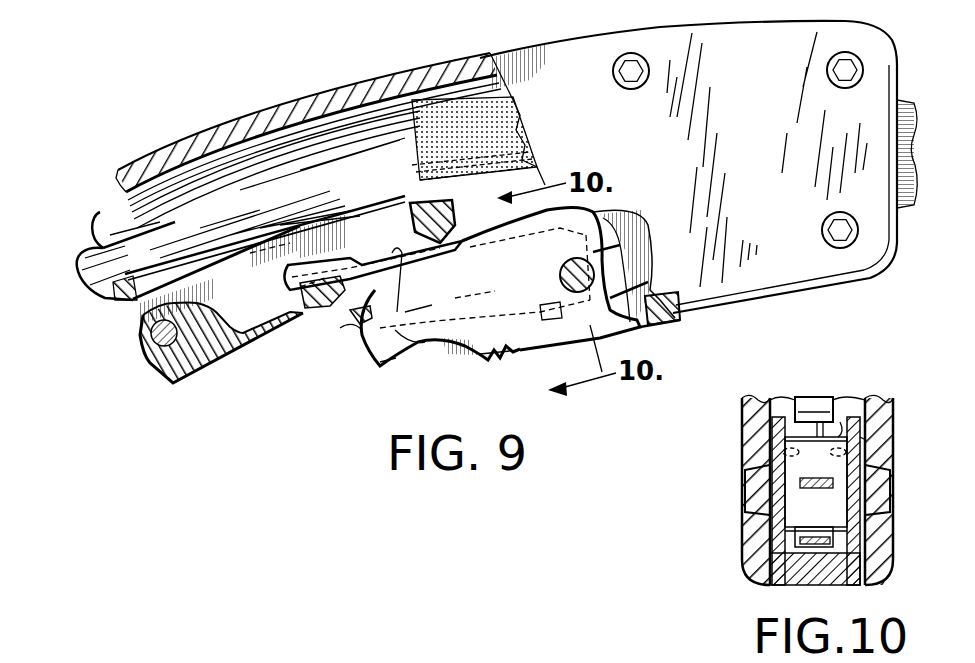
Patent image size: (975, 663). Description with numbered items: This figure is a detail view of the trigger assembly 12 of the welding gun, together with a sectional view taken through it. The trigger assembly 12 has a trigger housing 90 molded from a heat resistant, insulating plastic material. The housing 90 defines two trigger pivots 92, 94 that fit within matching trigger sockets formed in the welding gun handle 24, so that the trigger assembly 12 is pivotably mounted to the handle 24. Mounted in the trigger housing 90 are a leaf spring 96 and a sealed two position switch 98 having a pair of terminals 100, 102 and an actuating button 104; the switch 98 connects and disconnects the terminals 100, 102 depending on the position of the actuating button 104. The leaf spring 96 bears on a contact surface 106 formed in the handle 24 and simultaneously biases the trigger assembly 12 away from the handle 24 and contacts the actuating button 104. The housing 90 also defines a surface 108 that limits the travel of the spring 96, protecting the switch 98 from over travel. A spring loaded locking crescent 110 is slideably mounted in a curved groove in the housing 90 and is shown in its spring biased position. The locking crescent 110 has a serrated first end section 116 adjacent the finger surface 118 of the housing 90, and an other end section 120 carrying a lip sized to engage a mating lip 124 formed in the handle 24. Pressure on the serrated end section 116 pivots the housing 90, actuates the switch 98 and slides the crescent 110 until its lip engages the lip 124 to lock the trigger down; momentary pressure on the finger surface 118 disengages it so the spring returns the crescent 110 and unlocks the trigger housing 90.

In FIG. 9, the trigger assembly 12 is at (388, 365).
In FIG. 9, the welding gun handle 24 is at (208, 343).
In FIG. 10, the welding gun handle 24 is at (753, 547).
In FIG. 9, the trigger housing 90 is at (449, 277).
In FIG. 10, the trigger housing 90 is at (870, 443).
In FIG. 10, the trigger pivot 92 is at (752, 490).
In FIG. 9, the trigger pivot 94 is at (627, 270).
In FIG. 10, the trigger pivot 94 is at (883, 493).
In FIG. 9, the leaf spring 96 is at (378, 258).
In FIG. 10, the leaf spring 96 is at (812, 412).
In FIG. 9, the sealed two position switch 98 is at (593, 212).
In FIG. 10, the sealed two position switch 98 is at (800, 467).
In FIG. 9, the switch terminal 100 is at (563, 328).
In FIG. 10, the switch terminal 100 is at (823, 547).
In FIG. 9, the switch terminal 102 is at (628, 212).
In FIG. 10, the switch terminal 102 is at (775, 522).
In FIG. 9, the actuating button 104 is at (513, 136).
In FIG. 10, the actuating button 104 is at (840, 422).
In FIG. 9, the contact surface 106 is at (440, 205).
In FIG. 9, the surface 108 is at (418, 312).
In FIG. 9, the locking crescent 110 is at (426, 328).
In FIG. 9, the first end section 116 is at (488, 362).
In FIG. 9, the finger surface 118 is at (402, 333).
In FIG. 9, the other end section 120 is at (343, 330).
In FIG. 9, the mating lip 124 is at (308, 318).